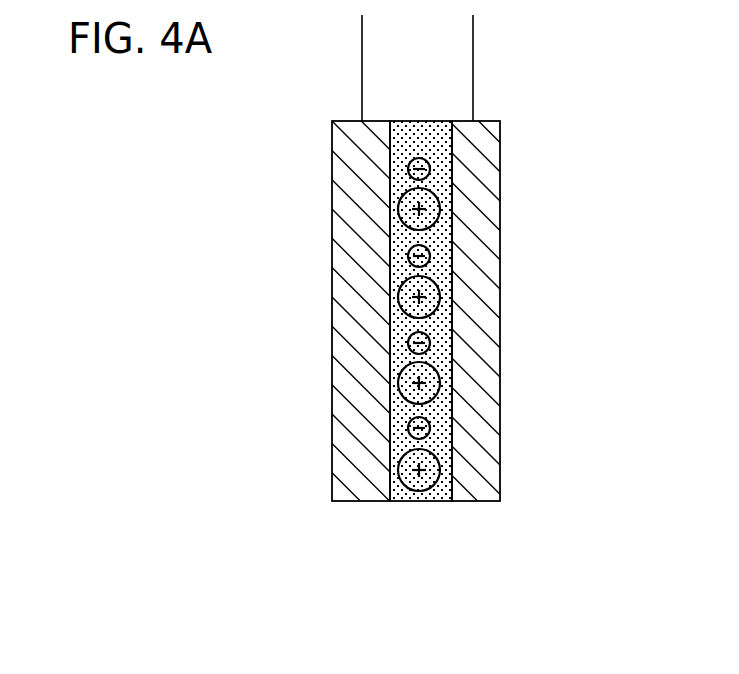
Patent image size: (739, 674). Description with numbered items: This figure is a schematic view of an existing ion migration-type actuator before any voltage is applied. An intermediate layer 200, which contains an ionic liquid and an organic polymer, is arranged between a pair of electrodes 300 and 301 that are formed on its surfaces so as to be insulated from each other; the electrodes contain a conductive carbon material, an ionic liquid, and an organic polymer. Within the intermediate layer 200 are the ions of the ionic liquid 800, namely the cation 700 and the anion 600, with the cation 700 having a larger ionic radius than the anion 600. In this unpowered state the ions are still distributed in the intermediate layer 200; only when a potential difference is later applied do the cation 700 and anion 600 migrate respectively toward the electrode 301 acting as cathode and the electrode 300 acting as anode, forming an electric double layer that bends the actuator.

The intermediate layer 200 is at (398, 333).
The electrode 300 is at (478, 252).
The electrode 301 is at (355, 217).
The anion 600 is at (430, 424).
The cation 700 is at (440, 467).
The ionic liquid 800 is at (514, 446).